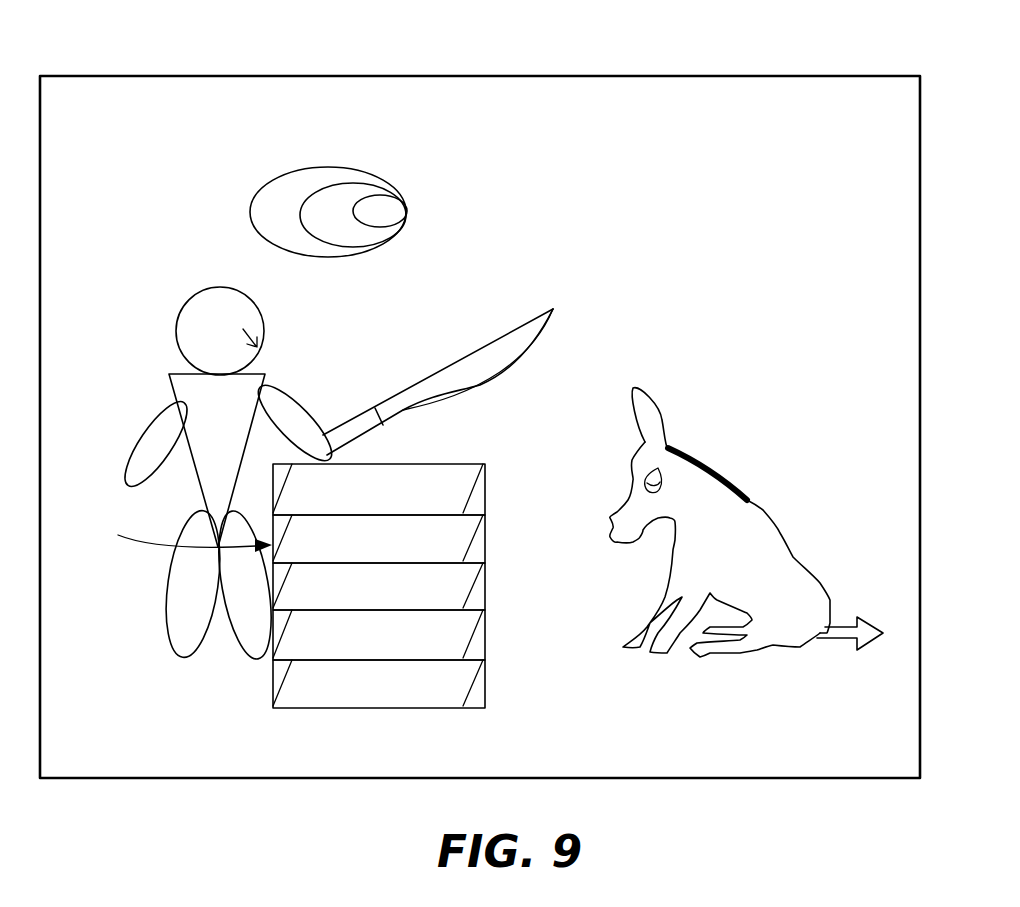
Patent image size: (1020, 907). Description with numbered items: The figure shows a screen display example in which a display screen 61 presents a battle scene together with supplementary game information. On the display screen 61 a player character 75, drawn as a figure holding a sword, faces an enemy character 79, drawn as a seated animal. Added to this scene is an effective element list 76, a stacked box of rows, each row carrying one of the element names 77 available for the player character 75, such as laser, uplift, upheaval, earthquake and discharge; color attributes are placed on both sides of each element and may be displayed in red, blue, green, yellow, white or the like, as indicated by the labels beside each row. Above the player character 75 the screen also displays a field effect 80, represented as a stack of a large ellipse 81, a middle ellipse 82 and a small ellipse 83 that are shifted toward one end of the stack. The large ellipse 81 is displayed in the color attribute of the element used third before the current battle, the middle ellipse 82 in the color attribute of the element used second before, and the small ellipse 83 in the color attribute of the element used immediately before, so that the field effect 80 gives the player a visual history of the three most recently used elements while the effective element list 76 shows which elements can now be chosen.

The display screen 61 is at (632, 58).
The player character 75 is at (245, 386).
The effective element list 76 is at (183, 529).
The element names 77 is at (456, 583).
The enemy character 79 is at (780, 533).
The field effect 80 is at (328, 172).
The large ellipse 81 is at (258, 211).
The middle ellipse 82 is at (357, 191).
The small ellipse 83 is at (393, 213).